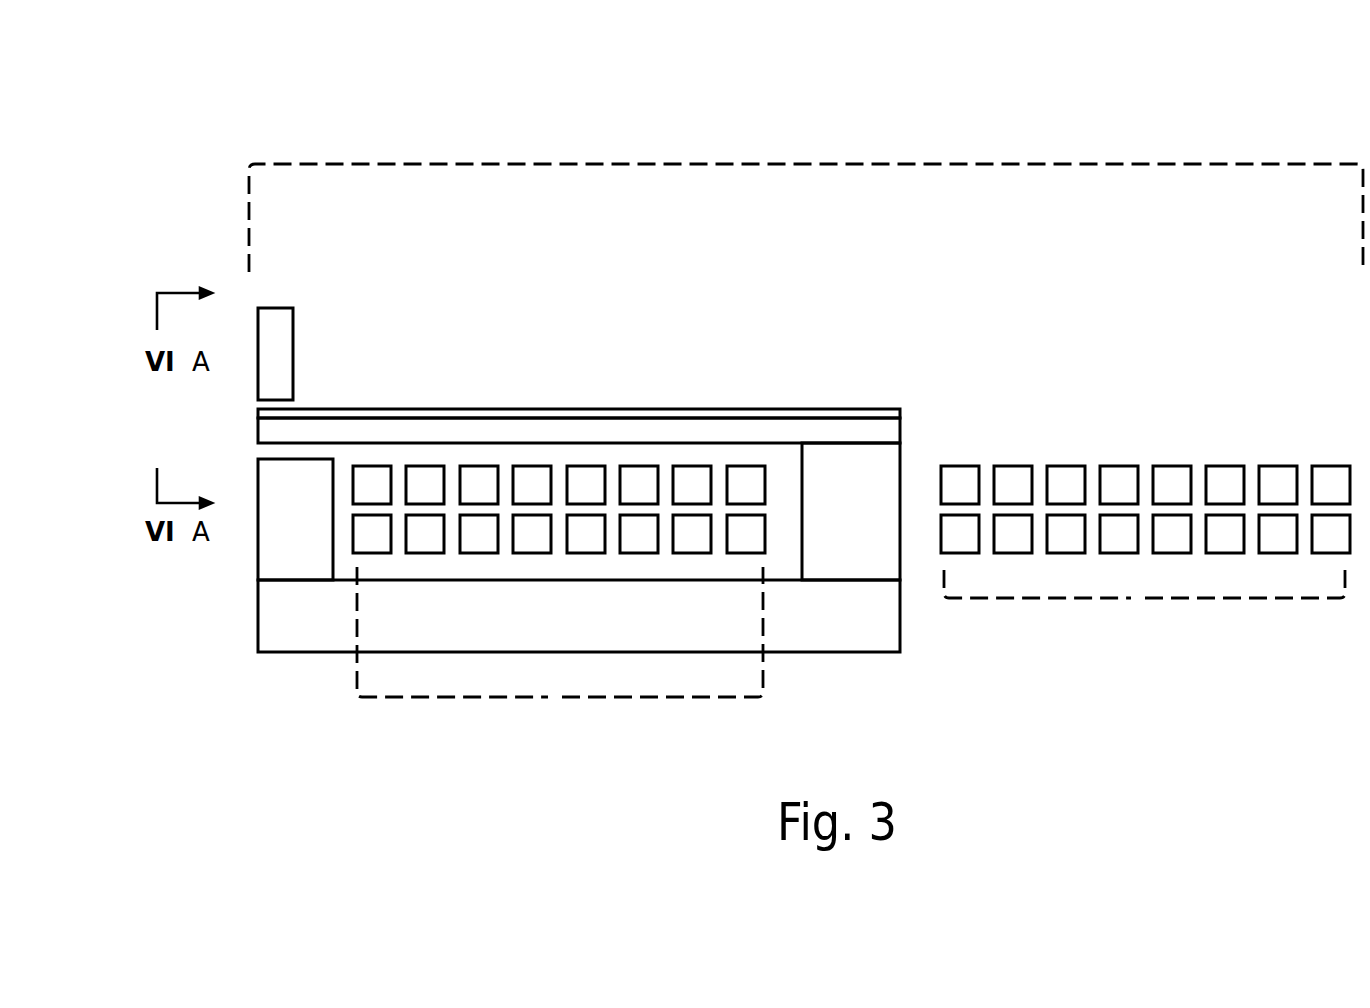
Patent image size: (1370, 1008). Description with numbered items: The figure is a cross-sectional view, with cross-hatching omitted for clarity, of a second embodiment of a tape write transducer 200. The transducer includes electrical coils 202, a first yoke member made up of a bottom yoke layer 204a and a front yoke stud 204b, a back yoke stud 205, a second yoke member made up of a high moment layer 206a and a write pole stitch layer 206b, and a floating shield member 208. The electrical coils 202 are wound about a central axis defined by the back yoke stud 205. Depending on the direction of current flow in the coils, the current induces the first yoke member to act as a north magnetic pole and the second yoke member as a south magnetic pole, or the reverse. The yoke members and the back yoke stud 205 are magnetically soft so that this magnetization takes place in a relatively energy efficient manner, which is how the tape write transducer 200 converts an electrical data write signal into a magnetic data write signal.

The tape write transducer 200 is at (825, 152).
The electrical coils 202 is at (548, 697).
The bottom yoke layer 204a is at (837, 652).
The front yoke stud 204b is at (278, 582).
The back yoke stud 205 is at (900, 565).
The high moment layer 206a is at (853, 409).
The write pole stitch layer 206b is at (900, 427).
The floating shield member 208 is at (275, 308).